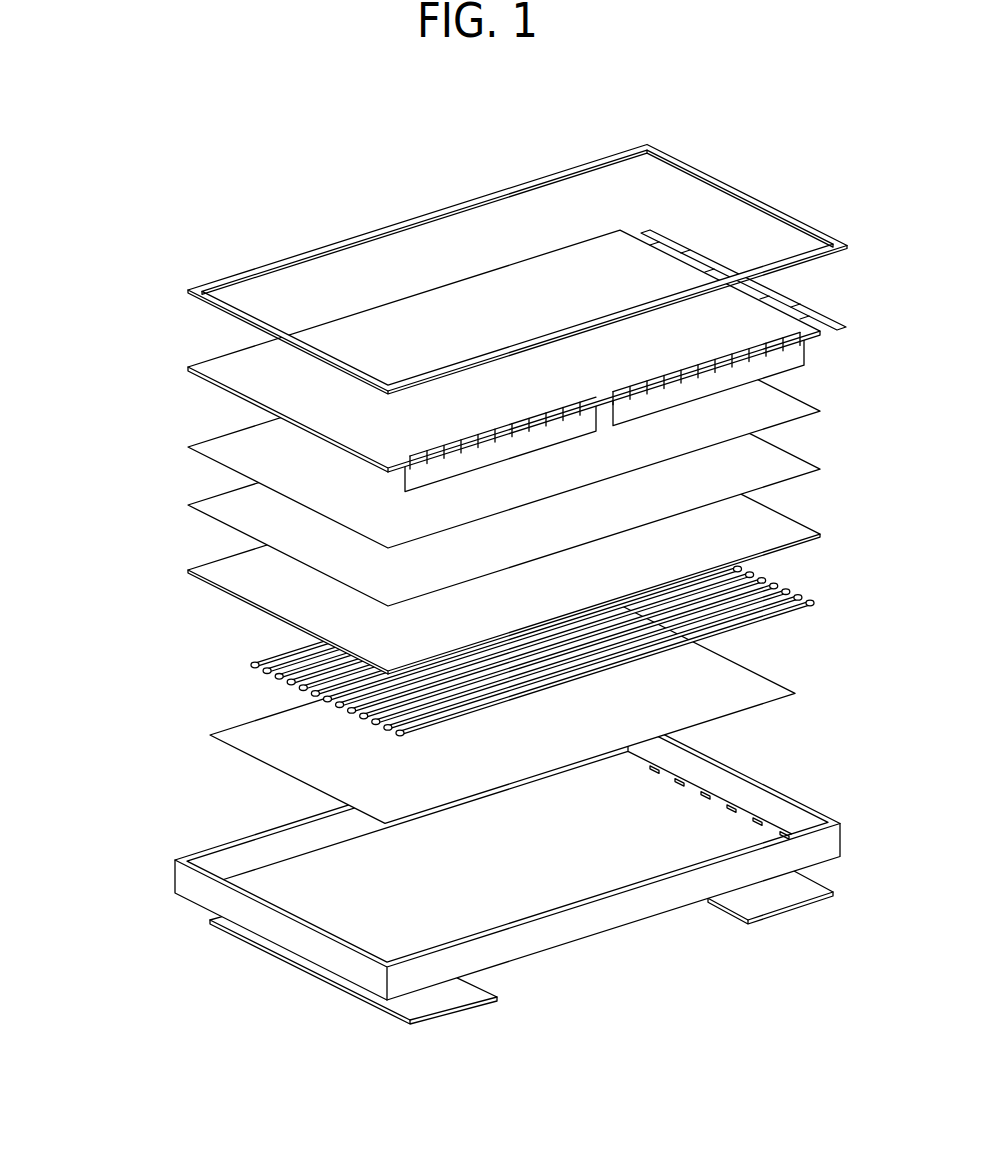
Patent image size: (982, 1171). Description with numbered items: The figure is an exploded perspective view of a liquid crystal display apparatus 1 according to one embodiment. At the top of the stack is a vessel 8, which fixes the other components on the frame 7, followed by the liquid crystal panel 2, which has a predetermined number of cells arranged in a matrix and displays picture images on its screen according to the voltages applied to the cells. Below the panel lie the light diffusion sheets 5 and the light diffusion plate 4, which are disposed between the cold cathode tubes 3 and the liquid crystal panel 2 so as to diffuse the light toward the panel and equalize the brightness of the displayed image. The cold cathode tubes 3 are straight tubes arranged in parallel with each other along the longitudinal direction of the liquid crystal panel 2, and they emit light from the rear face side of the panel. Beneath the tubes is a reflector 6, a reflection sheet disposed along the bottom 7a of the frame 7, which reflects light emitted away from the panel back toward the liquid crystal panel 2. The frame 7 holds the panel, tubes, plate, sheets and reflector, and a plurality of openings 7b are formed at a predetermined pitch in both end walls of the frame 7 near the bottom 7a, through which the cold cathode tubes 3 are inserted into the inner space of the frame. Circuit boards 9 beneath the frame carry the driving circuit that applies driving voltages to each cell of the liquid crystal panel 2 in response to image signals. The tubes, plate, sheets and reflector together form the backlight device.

The liquid crystal display apparatus 1 is at (853, 105).
The liquid crystal panel 2 is at (233, 365).
The cold cathode tubes 3 is at (283, 660).
The light diffusion plate 4 is at (218, 572).
The light diffusion sheets 5 is at (220, 442).
The reflector 6 is at (248, 735).
The frame 7 is at (465, 863).
The bottom 7a is at (577, 883).
The openings 7b is at (740, 803).
The vessel 8 is at (352, 239).
The circuit boards 9 is at (292, 955).